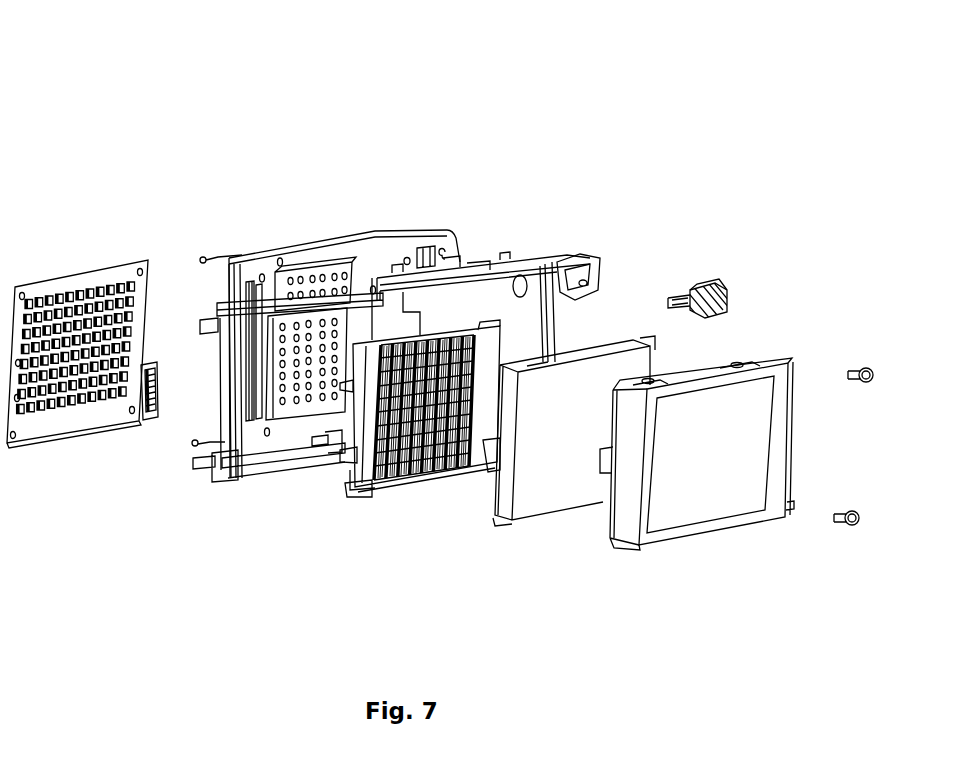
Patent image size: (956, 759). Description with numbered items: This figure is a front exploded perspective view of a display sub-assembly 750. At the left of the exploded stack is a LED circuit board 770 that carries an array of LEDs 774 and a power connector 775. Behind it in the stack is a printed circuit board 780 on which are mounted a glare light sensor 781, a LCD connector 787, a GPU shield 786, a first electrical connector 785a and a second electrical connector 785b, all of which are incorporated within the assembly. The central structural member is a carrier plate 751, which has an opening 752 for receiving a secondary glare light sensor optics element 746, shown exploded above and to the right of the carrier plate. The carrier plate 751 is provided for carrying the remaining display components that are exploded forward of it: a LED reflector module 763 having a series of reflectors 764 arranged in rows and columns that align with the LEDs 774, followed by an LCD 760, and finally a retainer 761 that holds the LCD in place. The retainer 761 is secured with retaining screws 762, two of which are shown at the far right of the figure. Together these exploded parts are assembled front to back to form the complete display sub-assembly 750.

The display sub-assembly 750 is at (297, 76).
The LED circuit board 770 is at (40, 433).
The LEDs 774 is at (117, 363).
The power connector 775 is at (143, 422).
The printed circuit board 780 is at (315, 243).
The glare light sensor 781 is at (420, 247).
The first electrical connector 785a is at (196, 447).
The second electrical connector 785b is at (200, 259).
The GPU shield 786 is at (340, 266).
The LCD connector 787 is at (247, 278).
The carrier plate 751 is at (540, 254).
The opening 752 is at (600, 254).
The secondary glare light sensor optics element 746 is at (716, 288).
The LED reflector module 763 is at (356, 488).
The reflectors 764 is at (445, 474).
The LCD 760 is at (523, 497).
The retainer 761 is at (617, 523).
The retaining screws 762 is at (845, 510).